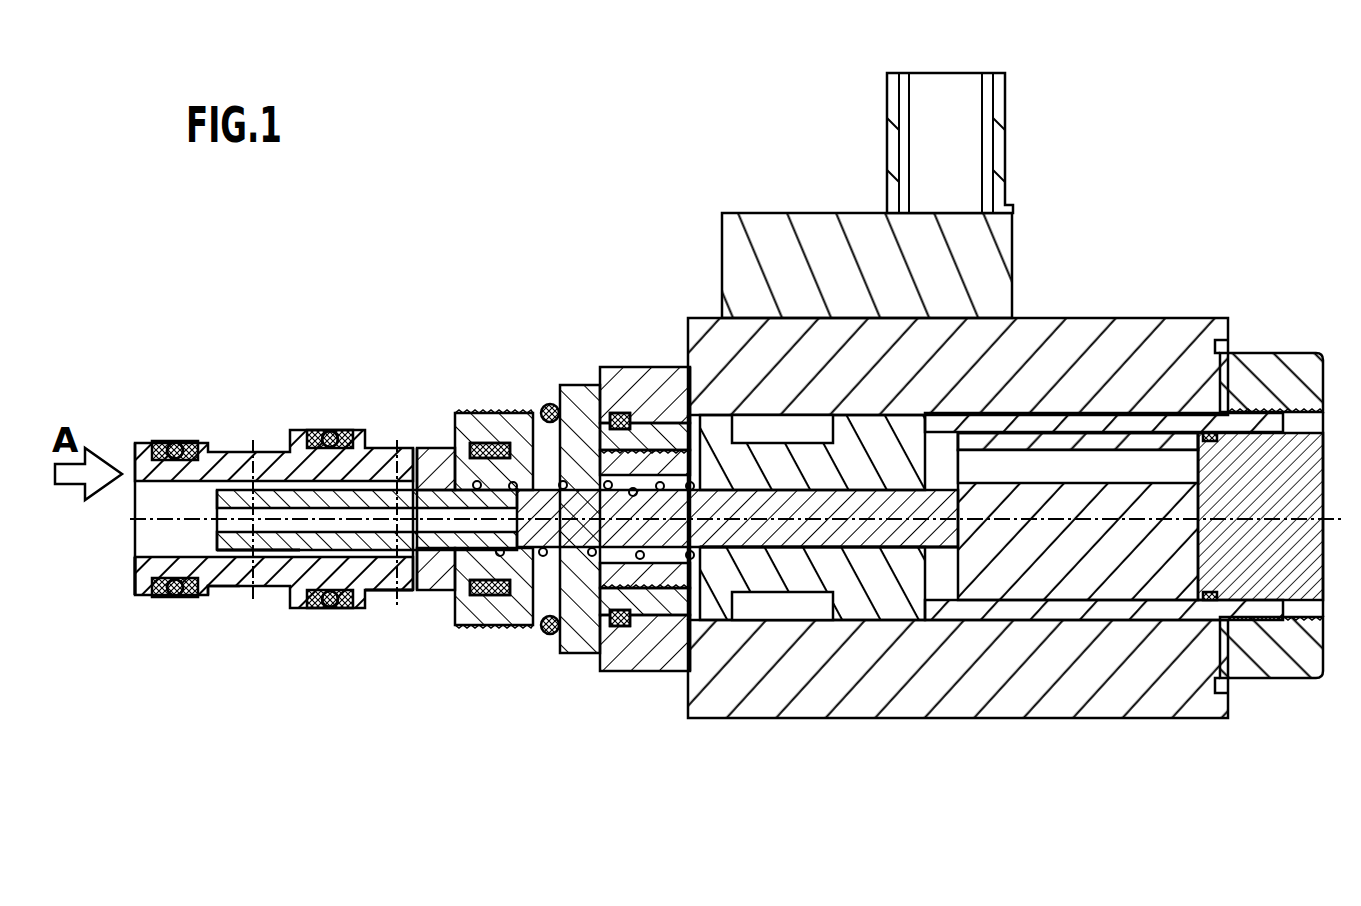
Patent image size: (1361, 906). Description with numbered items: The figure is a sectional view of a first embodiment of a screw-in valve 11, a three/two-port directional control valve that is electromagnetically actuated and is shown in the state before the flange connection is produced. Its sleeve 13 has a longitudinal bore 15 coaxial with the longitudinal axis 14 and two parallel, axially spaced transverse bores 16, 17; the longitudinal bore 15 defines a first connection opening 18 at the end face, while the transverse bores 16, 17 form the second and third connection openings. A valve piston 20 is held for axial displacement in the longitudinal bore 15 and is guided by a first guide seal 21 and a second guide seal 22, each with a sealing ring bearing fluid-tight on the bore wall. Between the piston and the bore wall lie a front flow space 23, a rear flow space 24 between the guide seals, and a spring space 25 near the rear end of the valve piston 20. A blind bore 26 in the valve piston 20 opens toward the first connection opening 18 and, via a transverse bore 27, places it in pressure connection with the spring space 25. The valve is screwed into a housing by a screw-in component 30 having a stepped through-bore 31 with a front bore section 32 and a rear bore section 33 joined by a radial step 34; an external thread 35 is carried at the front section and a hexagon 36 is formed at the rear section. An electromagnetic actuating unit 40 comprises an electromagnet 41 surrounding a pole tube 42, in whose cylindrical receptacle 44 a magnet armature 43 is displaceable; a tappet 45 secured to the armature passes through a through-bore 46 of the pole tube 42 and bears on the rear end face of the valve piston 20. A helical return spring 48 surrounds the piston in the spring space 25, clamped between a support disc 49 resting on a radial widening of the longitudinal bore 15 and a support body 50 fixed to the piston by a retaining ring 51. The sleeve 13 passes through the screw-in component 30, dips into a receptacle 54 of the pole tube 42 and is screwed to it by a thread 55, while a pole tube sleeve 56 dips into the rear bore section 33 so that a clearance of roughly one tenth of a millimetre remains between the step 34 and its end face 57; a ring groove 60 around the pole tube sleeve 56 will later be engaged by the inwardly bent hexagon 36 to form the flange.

The screw-in valve 11 is at (402, 196).
The sleeve 13 is at (362, 421).
The longitudinal axis 14 is at (130, 519).
The longitudinal bore 15 is at (146, 441).
The transverse bore 16 is at (245, 600).
The transverse bore 17 is at (378, 600).
The first connection opening 18 is at (133, 556).
The valve piston 20 is at (258, 590).
The first guide seal 21 is at (256, 443).
The second guide seal 22 is at (412, 445).
The front flow space 23 is at (208, 598).
The rear flow space 24 is at (312, 608).
The spring space 25 is at (485, 628).
The blind bore 26 is at (205, 448).
The transverse bore 27 is at (468, 413).
The screw-in component 30 is at (573, 376).
The through-bore 31 is at (425, 607).
The front bore section 32 is at (512, 632).
The rear bore section 33 is at (596, 655).
The step 34 is at (602, 410).
The external thread 35 is at (462, 628).
The hexagon 36 is at (620, 423).
The electromagnetic actuating unit 40 is at (1080, 306).
The electromagnet 41 is at (1150, 330).
The pole tube 42 is at (948, 400).
The magnet armature 43 is at (1062, 560).
The cylindrical receptacle 44 is at (960, 602).
The tappet 45 is at (887, 545).
The through-bore 46 is at (812, 540).
The helical return spring 48 is at (518, 412).
The support disc 49 is at (470, 443).
The support body 50 is at (634, 414).
The retaining ring 51 is at (700, 560).
The receptacle 54 is at (700, 640).
The thread 55 is at (656, 640).
The pole tube sleeve 56 is at (620, 655).
The end face 57 is at (582, 640).
The ring groove 60 is at (680, 650).